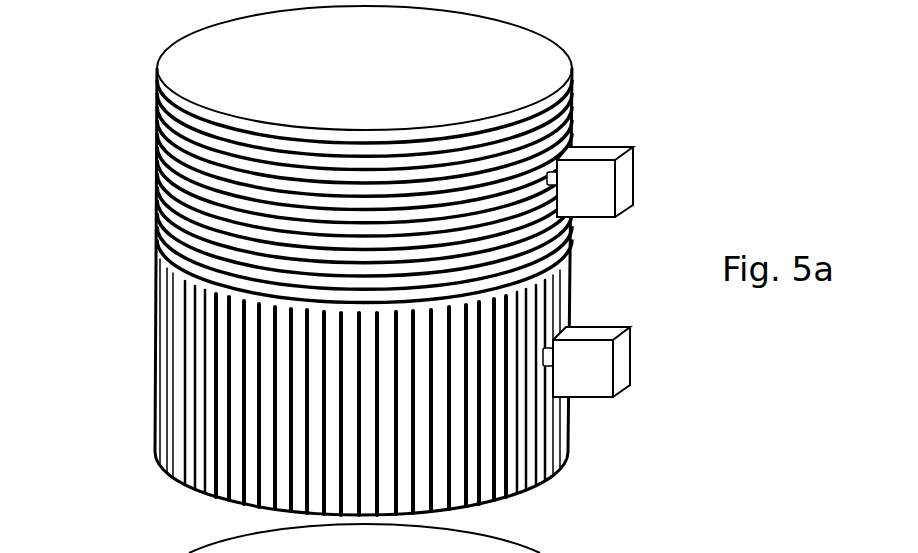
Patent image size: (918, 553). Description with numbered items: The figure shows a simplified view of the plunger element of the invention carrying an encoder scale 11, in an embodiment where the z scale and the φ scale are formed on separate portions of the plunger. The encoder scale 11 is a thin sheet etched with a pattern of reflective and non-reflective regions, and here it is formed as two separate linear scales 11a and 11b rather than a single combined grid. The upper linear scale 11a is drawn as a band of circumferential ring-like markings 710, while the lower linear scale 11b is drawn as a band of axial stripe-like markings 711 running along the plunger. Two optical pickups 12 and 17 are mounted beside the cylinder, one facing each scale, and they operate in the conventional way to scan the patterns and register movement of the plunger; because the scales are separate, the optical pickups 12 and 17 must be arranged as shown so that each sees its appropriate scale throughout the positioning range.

The encoder scale 11 is at (136, 63).
The linear scale 11a is at (292, 191).
The linear scale 11b is at (291, 387).
The circumferential rings 710 is at (157, 110).
The axial ribs 711 is at (157, 325).
The optical pickup 17 is at (569, 196).
The optical pickup 12 is at (568, 383).